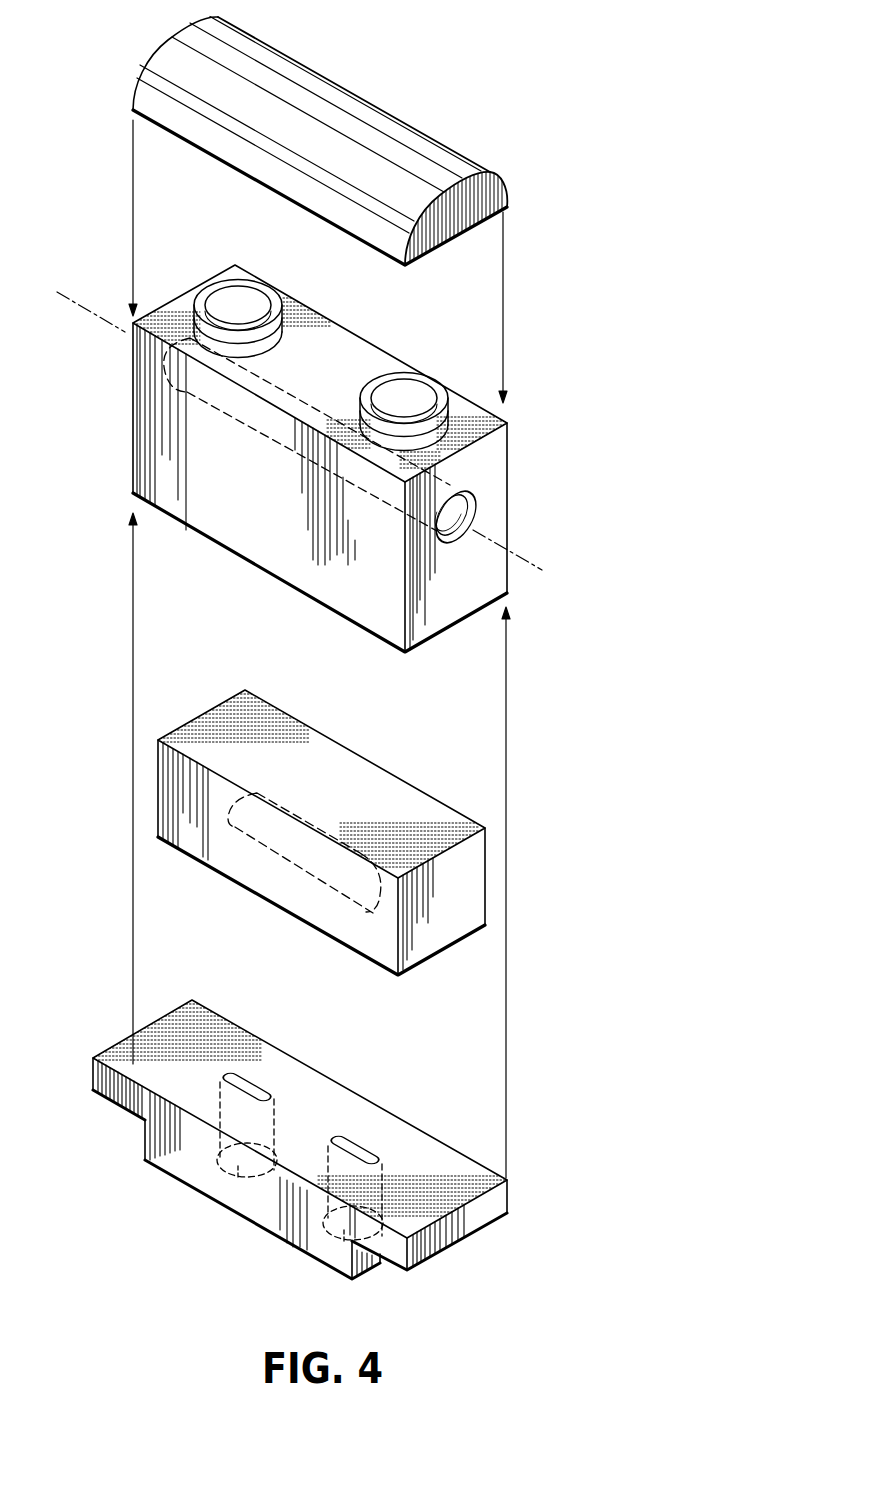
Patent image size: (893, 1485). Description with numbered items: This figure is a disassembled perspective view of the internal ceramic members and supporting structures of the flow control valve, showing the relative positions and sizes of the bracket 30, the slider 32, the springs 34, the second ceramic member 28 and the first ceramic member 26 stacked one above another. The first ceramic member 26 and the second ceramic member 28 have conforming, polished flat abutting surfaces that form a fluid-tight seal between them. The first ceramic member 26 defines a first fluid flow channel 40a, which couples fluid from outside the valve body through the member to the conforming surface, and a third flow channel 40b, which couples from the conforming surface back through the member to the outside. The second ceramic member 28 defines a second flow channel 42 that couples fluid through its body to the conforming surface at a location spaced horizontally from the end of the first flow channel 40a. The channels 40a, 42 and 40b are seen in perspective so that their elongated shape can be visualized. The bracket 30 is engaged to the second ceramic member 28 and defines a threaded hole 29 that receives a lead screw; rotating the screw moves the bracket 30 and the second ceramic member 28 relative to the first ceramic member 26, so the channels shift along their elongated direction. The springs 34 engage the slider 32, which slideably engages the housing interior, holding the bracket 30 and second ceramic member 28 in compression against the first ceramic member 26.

The first ceramic member 26 is at (112, 1052).
The second ceramic member 28 is at (473, 875).
The threaded hole 29 is at (472, 513).
The bracket 30 is at (492, 455).
The slider 32 is at (430, 147).
The springs 34 is at (257, 287).
The first fluid flow channel 40a is at (357, 1145).
The third flow channel 40b is at (250, 1087).
The second flow channel 42 is at (293, 850).